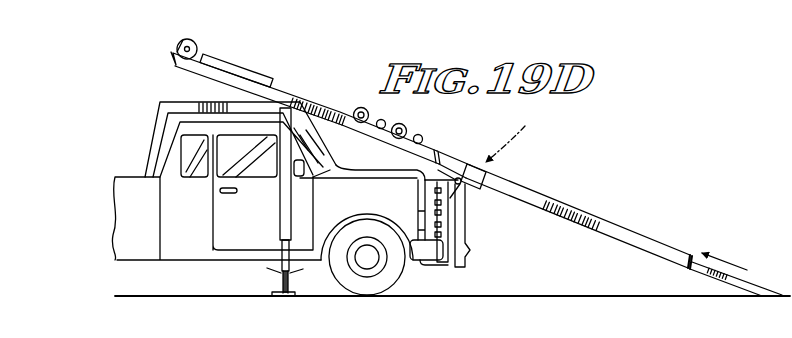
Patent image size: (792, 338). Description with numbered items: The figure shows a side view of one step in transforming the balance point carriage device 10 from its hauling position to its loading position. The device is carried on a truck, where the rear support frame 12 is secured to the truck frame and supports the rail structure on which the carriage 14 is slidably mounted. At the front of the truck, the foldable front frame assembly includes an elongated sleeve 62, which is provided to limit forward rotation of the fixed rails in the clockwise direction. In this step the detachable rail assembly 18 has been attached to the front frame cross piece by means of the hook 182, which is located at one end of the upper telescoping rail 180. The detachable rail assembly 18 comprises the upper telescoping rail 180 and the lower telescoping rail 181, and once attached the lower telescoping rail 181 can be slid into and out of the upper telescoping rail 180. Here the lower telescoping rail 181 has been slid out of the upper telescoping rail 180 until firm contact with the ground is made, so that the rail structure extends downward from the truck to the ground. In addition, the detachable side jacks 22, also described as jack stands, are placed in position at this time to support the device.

The balance point carriage device 10 is at (584, 125).
The rear support frame 12 is at (146, 149).
The carriage 14 is at (317, 98).
The detachable rail assembly 18 is at (542, 193).
The detachable side jacks 22 is at (282, 222).
The elongated sleeve 62 is at (466, 220).
The upper telescoping rail 180 is at (626, 205).
The lower telescoping rail 181 is at (762, 293).
The hook 182 is at (458, 178).